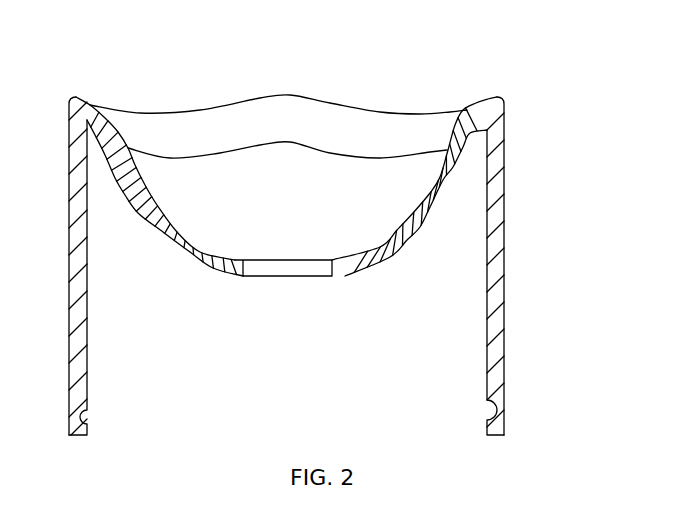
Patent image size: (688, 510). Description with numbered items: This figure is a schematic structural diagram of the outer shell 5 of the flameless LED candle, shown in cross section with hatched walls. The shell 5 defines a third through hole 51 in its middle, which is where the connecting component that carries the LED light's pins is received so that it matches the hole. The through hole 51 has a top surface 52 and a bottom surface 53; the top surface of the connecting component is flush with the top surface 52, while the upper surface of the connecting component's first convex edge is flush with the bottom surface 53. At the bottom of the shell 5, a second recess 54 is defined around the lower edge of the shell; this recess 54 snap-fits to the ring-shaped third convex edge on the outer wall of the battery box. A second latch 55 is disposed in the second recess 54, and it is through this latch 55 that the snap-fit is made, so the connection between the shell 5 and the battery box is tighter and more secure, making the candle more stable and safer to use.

The shell 5 is at (492, 128).
The third through hole 51 is at (278, 260).
The top surface of the third through hole 52 is at (243, 267).
The bottom surface of the third through hole 53 is at (242, 275).
The second recess 54 is at (82, 414).
The second latch 55 is at (495, 413).